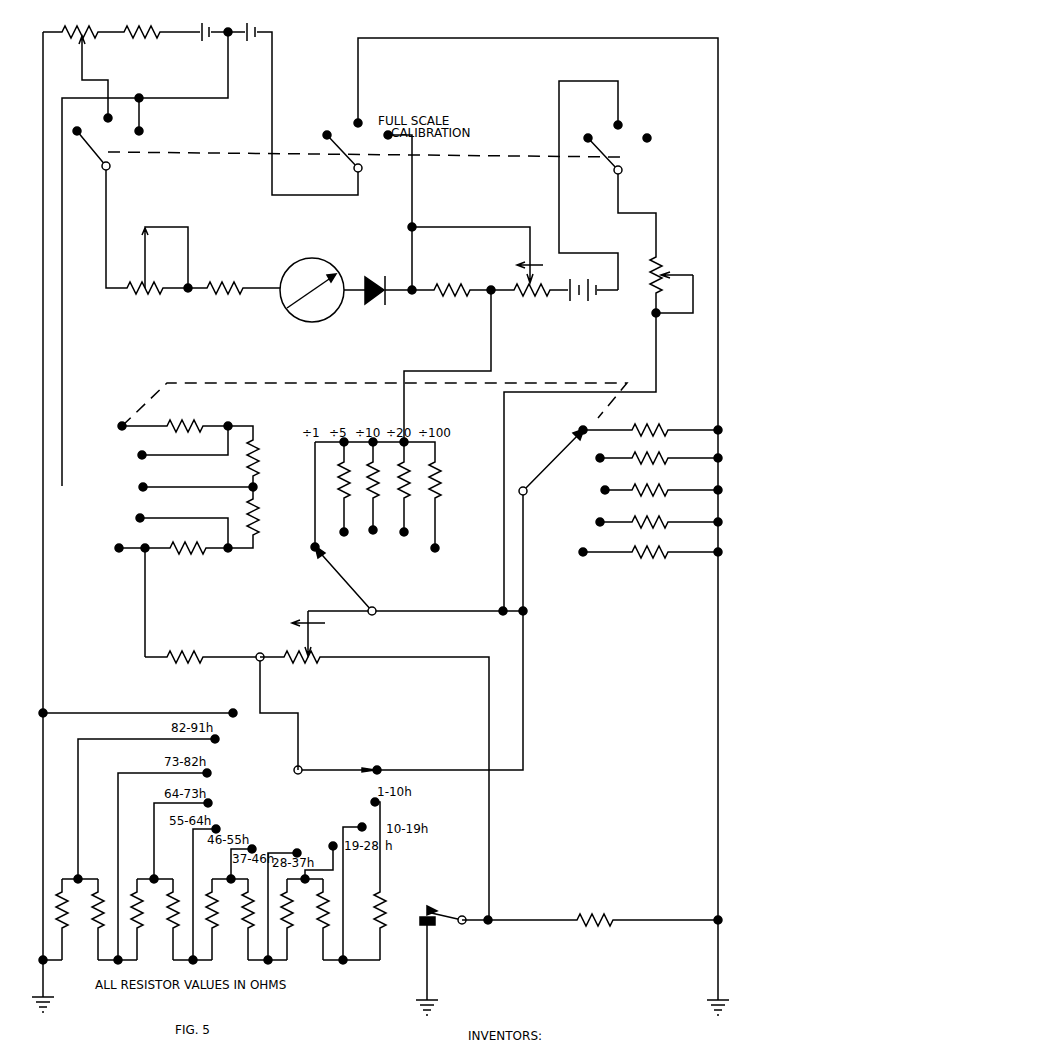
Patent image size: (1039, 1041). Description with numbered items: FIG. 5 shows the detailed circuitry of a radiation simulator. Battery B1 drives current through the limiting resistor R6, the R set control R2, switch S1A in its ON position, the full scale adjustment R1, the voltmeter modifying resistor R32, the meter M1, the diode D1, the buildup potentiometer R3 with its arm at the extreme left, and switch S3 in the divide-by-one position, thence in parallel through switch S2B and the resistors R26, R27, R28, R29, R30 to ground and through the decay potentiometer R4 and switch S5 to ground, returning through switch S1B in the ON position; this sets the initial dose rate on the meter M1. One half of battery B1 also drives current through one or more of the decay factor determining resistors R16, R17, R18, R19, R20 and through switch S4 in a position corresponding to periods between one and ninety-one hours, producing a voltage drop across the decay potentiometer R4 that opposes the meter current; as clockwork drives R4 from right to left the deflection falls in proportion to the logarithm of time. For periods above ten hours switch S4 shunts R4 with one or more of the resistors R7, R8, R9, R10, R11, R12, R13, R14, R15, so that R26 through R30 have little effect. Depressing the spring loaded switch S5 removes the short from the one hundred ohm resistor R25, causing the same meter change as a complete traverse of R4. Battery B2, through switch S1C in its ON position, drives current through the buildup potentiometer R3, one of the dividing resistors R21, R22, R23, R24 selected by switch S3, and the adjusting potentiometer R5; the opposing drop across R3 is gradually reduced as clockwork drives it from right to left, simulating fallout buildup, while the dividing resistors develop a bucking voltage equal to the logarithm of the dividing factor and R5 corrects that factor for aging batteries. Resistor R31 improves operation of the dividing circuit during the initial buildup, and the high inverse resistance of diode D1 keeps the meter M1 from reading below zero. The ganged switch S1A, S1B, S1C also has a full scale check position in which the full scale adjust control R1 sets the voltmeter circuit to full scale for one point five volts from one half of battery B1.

The R set control R2 is at (78, 31).
The limiting resistor R6 is at (142, 31).
The battery B1 is at (230, 33).
The switch S1a S1A is at (105, 207).
The switch S1b S1B is at (343, 142).
The switch S1c S1C is at (607, 185).
The full scale adjustment R1 is at (161, 283).
The voltmeter multiplying resistor R32 is at (242, 289).
The meter M1 is at (314, 281).
The diode D1 is at (398, 280).
The resistor R31 is at (472, 292).
The buildup potentiometer R3 is at (490, 271).
The battery B2 is at (594, 291).
The adjusting potentiometer R5 is at (598, 433).
The decay factor determining resistor R16 is at (185, 433).
The decay factor determining resistor R17 is at (218, 464).
The decay factor determining resistor R18 is at (217, 519).
The decay factor determining resistor R19 is at (175, 593).
The dividing resistor R21 is at (335, 489).
The dividing resistor R22 is at (364, 488).
The dividing resistor R23 is at (395, 489).
The dividing resistor R24 is at (425, 500).
The switch S3 is at (417, 579).
The switch S2b S2B is at (442, 598).
The switch S4 is at (327, 769).
The resistor R26 is at (652, 424).
The resistor R27 is at (659, 452).
The resistor R28 is at (661, 484).
The resistor R29 is at (659, 516).
The resistor R30 is at (650, 546).
The decay factor determining resistor R20 is at (221, 704).
The decay potentiometer R4 is at (374, 765).
The shunting resistor R7 is at (56, 919).
The shunting resistor R8 is at (92, 919).
The shunting resistor R9 is at (130, 919).
The shunting resistor R10 is at (163, 919).
The shunting resistor R11 is at (203, 919).
The shunting resistor R12 is at (241, 919).
The shunting resistor R13 is at (278, 919).
The shunting resistor R14 is at (312, 919).
The shunting resistor R15 is at (359, 925).
The spring loaded switch S5 is at (495, 957).
The one hundred ohm resistor R25 is at (646, 922).